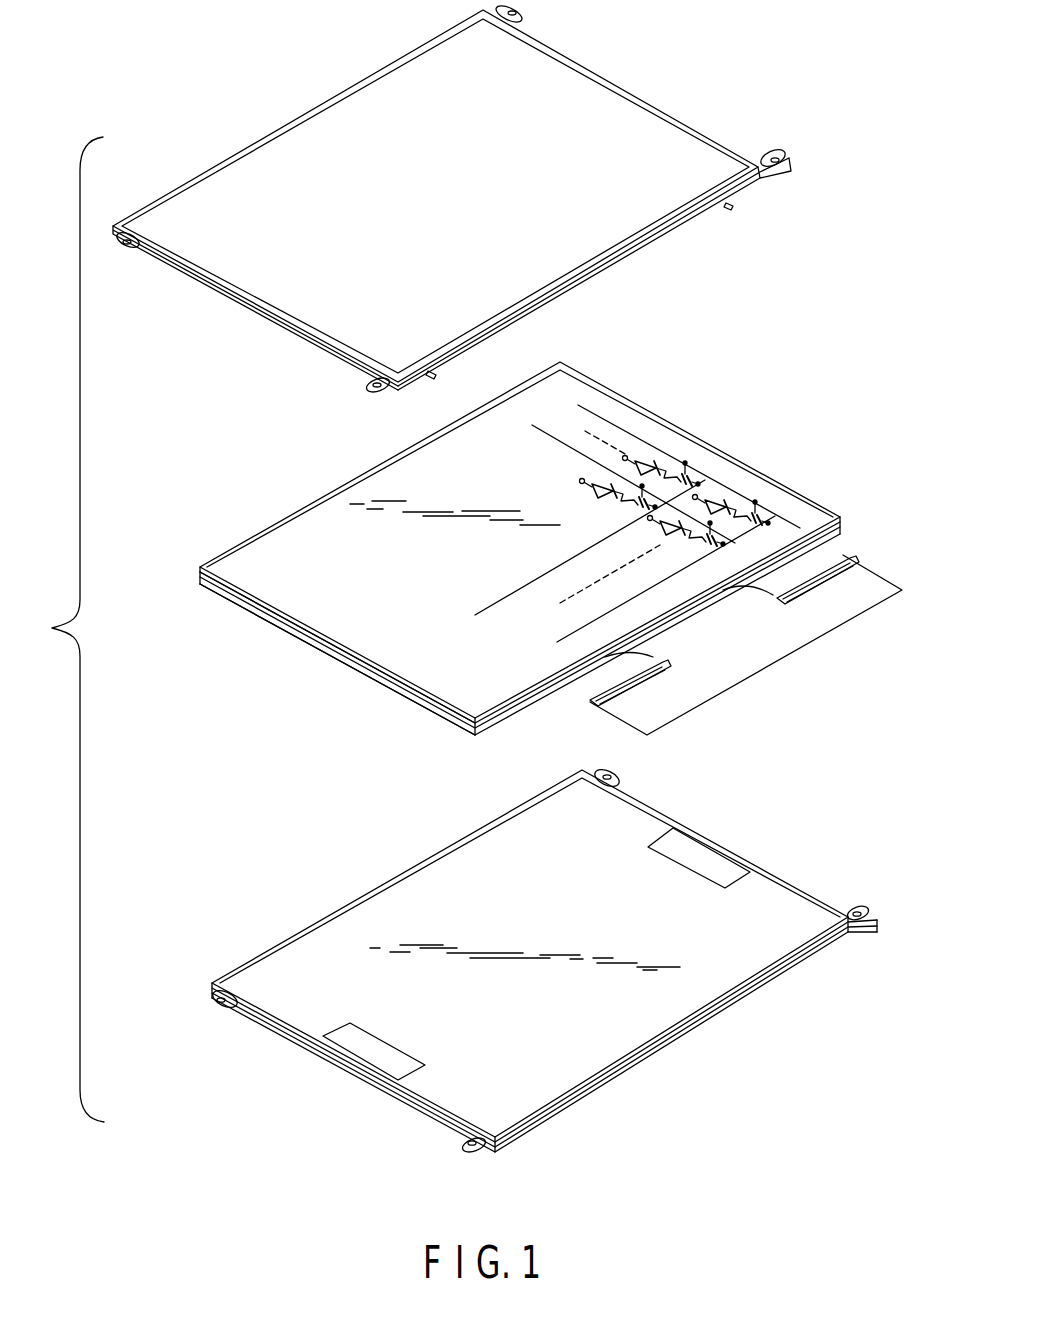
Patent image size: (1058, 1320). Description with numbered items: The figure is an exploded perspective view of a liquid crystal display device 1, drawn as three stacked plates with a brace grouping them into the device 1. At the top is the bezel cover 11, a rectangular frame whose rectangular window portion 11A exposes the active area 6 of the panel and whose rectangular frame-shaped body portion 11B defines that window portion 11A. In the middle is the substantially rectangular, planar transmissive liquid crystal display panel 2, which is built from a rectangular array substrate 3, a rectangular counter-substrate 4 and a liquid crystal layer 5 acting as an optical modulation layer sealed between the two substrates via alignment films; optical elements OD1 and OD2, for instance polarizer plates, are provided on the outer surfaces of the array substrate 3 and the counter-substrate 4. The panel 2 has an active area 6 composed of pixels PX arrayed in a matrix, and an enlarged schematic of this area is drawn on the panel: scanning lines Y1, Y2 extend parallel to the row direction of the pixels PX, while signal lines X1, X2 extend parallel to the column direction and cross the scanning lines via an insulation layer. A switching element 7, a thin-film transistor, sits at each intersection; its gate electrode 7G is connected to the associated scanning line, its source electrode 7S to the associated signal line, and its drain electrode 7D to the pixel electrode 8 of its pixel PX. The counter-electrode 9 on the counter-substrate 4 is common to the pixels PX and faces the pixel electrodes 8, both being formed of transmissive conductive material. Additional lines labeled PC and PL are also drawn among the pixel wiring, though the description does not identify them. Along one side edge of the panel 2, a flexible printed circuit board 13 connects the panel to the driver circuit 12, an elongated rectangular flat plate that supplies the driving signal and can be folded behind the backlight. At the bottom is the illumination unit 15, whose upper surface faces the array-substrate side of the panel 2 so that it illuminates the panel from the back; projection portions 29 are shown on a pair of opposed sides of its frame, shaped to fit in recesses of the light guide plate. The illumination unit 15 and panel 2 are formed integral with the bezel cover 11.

The liquid crystal display device 1 is at (65, 629).
The liquid crystal display panel 2 is at (539, 553).
The array substrate 3 is at (544, 468).
The counter-substrate 4 is at (567, 468).
The liquid crystal layer 5 is at (647, 541).
The active area 6 is at (648, 437).
The switching element 7 is at (706, 606).
The source electrode 7S is at (789, 477).
The gate electrode 7G is at (798, 495).
The drain electrode 7D is at (756, 581).
The pixel electrode 8 is at (676, 560).
The counter-electrode 9 is at (631, 522).
The bezel cover 11 is at (455, 199).
The window portion 11A is at (435, 190).
The body portion 11B is at (455, 274).
The driver circuit 12 is at (761, 633).
The flexible printed circuit board 13 is at (723, 633).
The illumination unit 15 is at (543, 960).
The projection portion 29 is at (536, 937).
The optical element OD1 is at (312, 659).
The optical element OD2 is at (310, 626).
The pixel PX is at (709, 528).
The pixel control line PC is at (572, 425).
The power supply line PL is at (578, 590).
The signal line X1 is at (648, 437).
The signal line X2 is at (618, 484).
The scanning line Y1 is at (636, 590).
The scanning line Y2 is at (564, 551).